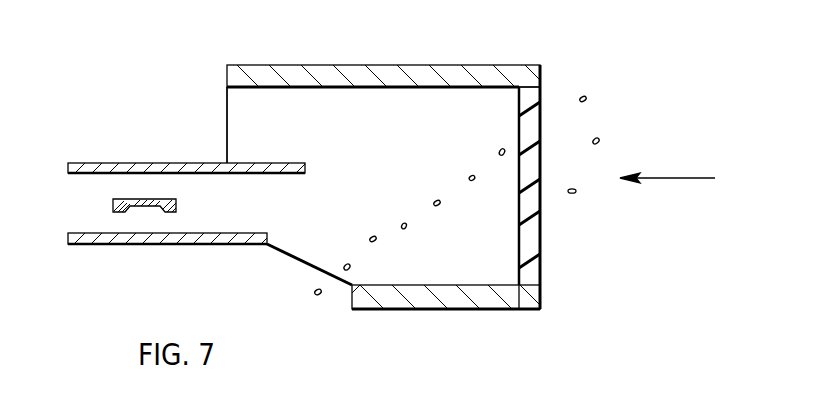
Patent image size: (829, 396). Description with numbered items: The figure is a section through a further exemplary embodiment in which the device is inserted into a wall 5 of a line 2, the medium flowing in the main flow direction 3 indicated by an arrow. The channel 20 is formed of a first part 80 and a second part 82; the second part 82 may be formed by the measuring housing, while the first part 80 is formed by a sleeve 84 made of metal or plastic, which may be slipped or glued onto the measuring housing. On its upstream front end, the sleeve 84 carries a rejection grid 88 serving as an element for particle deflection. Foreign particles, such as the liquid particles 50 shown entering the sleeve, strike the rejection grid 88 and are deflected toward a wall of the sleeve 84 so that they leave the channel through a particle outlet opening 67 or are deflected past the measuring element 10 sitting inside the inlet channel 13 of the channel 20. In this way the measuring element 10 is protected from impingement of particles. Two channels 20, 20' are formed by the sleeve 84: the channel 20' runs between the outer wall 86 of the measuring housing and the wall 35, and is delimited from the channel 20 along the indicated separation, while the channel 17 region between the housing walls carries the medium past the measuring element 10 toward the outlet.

The line 2 is at (332, 354).
The main flow direction 3 is at (686, 179).
The wall 5 is at (190, 238).
The measuring element 10 is at (132, 203).
The inlet channel 13 is at (435, 130).
The tube channel 17 is at (262, 197).
The channel 20 is at (178, 210).
The channel 20' is at (415, 190).
The edge surface / wall of channel 35 is at (377, 94).
The liquid particles 50 is at (584, 96).
The particle outlet opening 67 is at (227, 128).
The first part 80 is at (458, 260).
The second part 82 is at (133, 225).
The sleeve 84 is at (446, 297).
The outer wall 86 is at (97, 160).
The rejection grid 88 is at (530, 243).